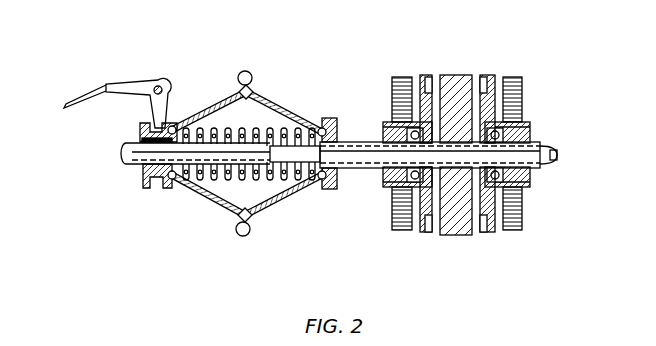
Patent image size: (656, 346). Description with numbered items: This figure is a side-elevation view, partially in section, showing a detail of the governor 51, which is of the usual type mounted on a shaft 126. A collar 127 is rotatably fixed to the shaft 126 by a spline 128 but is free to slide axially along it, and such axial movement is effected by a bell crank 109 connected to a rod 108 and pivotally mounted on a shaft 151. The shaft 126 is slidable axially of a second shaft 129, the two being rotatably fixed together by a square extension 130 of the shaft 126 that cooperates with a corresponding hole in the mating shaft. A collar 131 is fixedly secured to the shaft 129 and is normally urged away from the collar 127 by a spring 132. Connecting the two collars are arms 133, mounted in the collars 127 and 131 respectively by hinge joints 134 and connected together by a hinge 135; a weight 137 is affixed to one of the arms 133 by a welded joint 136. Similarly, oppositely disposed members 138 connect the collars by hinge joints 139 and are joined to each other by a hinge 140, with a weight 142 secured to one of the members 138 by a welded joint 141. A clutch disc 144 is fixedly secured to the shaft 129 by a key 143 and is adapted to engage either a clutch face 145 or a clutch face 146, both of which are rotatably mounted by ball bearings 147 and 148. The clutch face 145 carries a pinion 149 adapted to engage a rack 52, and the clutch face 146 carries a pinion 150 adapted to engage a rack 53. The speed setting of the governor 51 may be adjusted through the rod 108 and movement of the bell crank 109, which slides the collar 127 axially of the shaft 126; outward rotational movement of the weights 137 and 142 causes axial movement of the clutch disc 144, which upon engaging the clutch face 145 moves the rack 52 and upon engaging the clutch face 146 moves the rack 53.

The governor 51 is at (305, 65).
The rack 52 is at (398, 222).
The rack 53 is at (517, 215).
The rod 108 is at (96, 94).
The bell crank 109 is at (134, 82).
The shaft 126 is at (132, 157).
The collar 127 is at (144, 128).
The spline 128 is at (142, 140).
The shaft 129 is at (382, 156).
The square extension 130 is at (303, 152).
The collar 131 is at (338, 128).
The spring 132 is at (317, 180).
The arms 133 is at (256, 97).
The hinge joints 134 is at (174, 126).
The hinge 135 is at (241, 89).
The welded joint 136 is at (251, 89).
The weight 137 is at (245, 71).
The members 138 is at (271, 202).
The hinge joints 139 is at (172, 180).
The hinge 140 is at (253, 216).
The welded joint 141 is at (250, 223).
The weight 142 is at (236, 232).
The key 143 is at (457, 140).
The clutch disc 144 is at (461, 235).
The clutch face 145 is at (428, 234).
The clutch face 146 is at (489, 236).
The ball bearing 147 is at (413, 127).
The ball bearing 148 is at (530, 127).
The pinion 149 is at (388, 182).
The pinion 150 is at (530, 175).
The shaft 151 is at (160, 86).